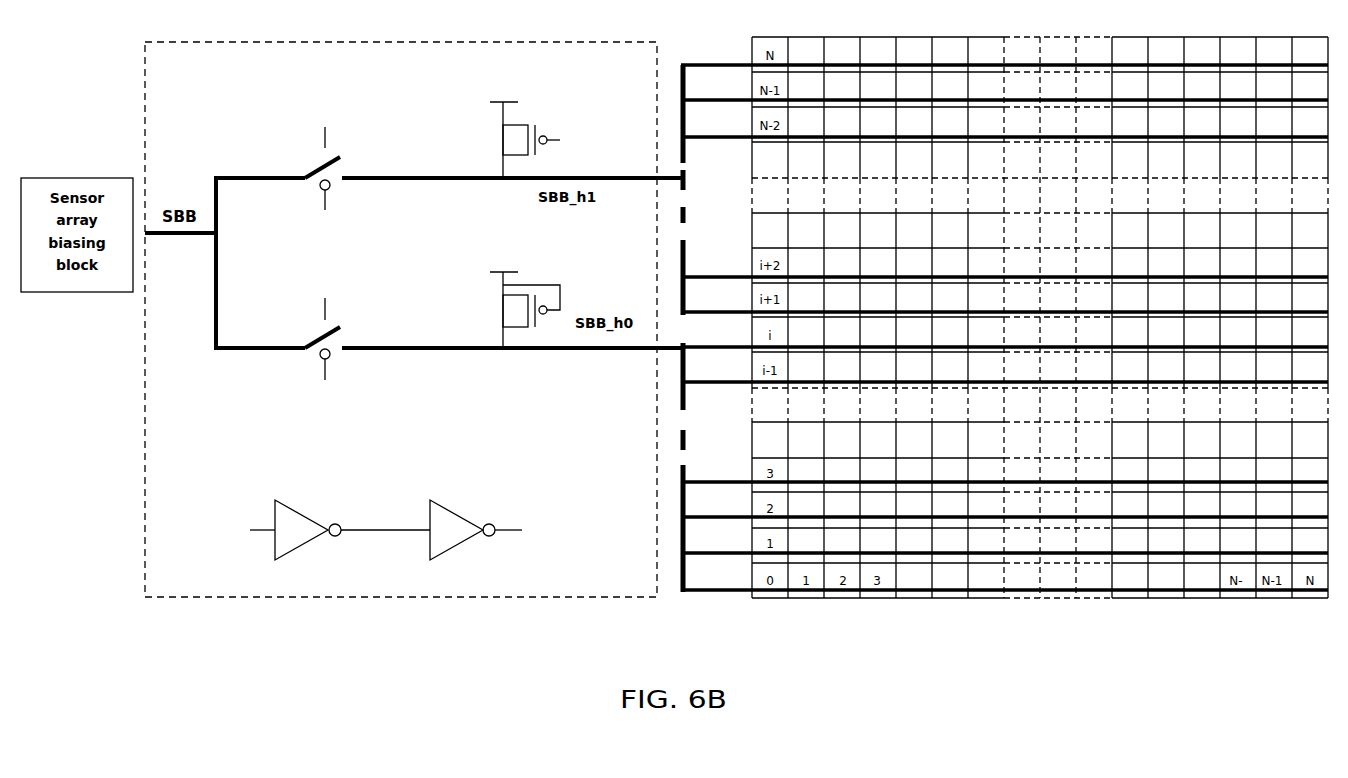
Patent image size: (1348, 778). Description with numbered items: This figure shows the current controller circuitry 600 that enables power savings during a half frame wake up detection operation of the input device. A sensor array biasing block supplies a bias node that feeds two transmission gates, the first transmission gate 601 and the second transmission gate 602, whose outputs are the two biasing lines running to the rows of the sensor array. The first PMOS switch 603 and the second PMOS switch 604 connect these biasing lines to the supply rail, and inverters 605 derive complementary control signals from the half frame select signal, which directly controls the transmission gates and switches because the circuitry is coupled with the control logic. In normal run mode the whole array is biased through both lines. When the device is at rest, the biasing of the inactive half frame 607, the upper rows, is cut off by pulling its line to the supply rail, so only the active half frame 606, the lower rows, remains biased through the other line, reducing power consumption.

The current controller circuitry 600 is at (208, 80).
The transmission gate txgate_0 601 is at (255, 389).
The transmission gate txgate_1 602 is at (225, 141).
The PMOS switch sw_0 603 is at (465, 335).
The PMOS switch sw_1 604 is at (465, 134).
The inverters 605 is at (290, 530).
The active half frame 606 is at (724, 572).
The inactive half frame 607 is at (735, 80).